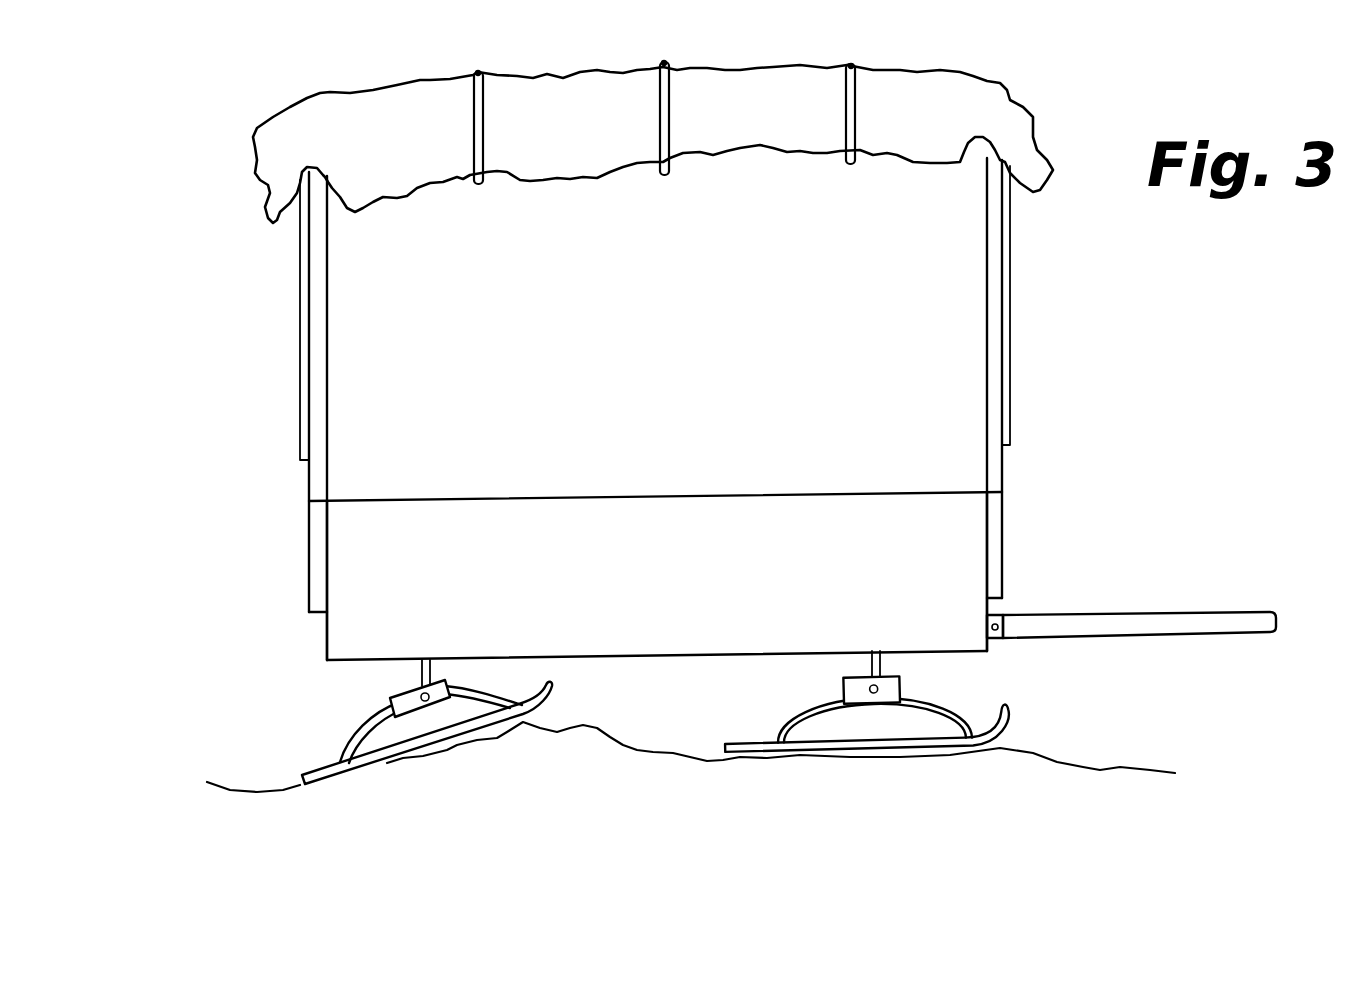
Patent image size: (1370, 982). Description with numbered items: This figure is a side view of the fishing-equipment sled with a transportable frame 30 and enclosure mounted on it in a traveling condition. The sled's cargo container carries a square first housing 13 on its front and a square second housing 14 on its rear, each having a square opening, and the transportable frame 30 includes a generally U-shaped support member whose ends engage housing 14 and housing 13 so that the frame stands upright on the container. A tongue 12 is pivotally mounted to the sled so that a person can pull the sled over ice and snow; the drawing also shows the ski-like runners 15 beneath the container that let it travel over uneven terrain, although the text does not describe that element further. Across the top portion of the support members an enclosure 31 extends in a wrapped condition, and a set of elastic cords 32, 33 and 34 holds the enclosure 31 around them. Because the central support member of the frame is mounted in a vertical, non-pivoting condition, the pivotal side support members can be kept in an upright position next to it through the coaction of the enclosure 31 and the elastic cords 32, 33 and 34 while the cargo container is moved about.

The tongue 12 is at (1086, 615).
The first housing 13 is at (1004, 531).
The second housing 14 is at (312, 546).
The ski assembly 15 is at (950, 692).
The transportable frame 30 is at (333, 284).
The enclosure 31 is at (725, 88).
The elastic cord 32 is at (479, 73).
The elastic cord 33 is at (664, 62).
The elastic cord 34 is at (851, 65).